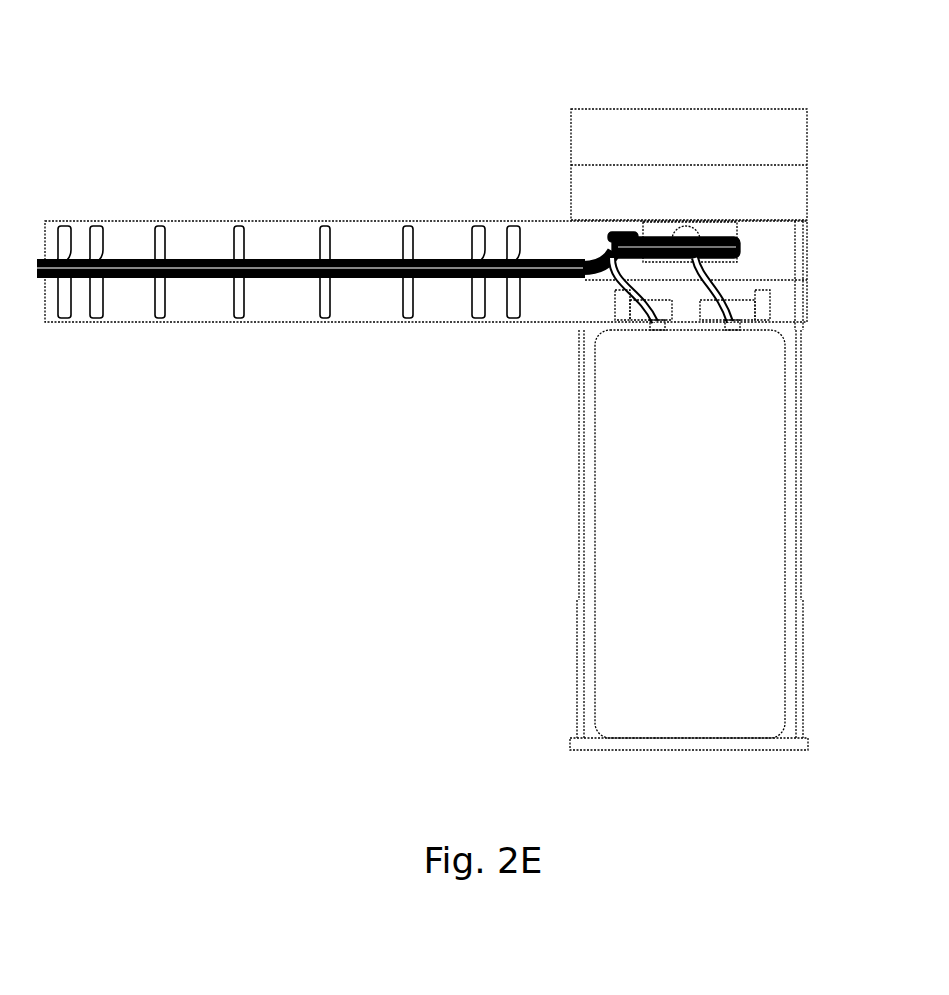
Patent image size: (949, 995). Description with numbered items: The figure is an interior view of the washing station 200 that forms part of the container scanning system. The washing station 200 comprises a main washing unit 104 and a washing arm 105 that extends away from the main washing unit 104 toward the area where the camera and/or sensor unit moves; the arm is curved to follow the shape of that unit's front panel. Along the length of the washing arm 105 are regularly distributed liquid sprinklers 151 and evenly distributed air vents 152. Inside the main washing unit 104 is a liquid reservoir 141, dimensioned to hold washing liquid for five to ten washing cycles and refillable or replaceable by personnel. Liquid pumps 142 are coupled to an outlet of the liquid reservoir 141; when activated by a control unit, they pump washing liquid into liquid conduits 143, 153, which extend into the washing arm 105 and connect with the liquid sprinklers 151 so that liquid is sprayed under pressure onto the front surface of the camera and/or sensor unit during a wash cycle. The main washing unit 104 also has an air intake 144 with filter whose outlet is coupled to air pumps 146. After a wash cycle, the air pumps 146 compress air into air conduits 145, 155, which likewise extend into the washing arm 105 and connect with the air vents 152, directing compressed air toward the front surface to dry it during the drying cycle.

The washing station 200 is at (332, 97).
The washing arm 105 is at (274, 243).
The liquid sprinklers 151 is at (97, 228).
The air vents 152 is at (184, 262).
The air conduit 155 is at (450, 262).
The liquid conduit 153 is at (440, 276).
The main washing unit 104 is at (793, 137).
The air intake 144 is at (687, 228).
The air conduit 145 is at (740, 238).
The air pumps 146 is at (745, 252).
The liquid conduit 143 is at (720, 283).
The liquid pumps 142 is at (745, 306).
The liquid reservoir 141 is at (763, 557).